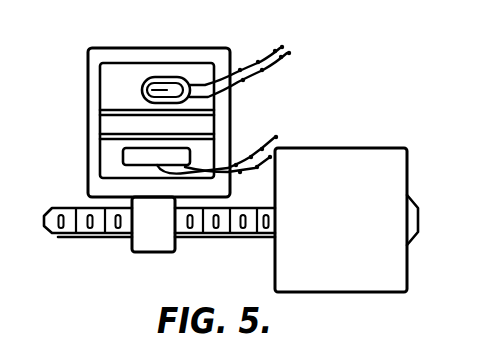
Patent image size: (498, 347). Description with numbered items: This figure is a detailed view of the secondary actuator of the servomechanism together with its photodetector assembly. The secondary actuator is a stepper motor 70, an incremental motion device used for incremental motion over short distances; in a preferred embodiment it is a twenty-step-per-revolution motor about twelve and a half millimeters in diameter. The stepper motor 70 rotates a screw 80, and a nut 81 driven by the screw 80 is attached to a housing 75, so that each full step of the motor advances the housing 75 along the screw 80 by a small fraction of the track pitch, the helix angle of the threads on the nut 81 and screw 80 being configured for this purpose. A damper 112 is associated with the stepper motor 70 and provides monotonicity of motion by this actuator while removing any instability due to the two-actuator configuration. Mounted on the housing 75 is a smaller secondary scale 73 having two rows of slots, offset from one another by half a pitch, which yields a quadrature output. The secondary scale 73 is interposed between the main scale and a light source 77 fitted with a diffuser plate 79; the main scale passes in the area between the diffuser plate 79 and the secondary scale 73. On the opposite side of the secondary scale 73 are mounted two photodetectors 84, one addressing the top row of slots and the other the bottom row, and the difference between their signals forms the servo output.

The stepper motor 70 is at (360, 152).
The secondary scale 73 is at (207, 134).
The housing 75 is at (88, 86).
The light source 77 is at (172, 77).
The diffuser plate 79 is at (210, 109).
The screw 80 is at (83, 242).
The nut 81 is at (156, 243).
The photodetectors 84 is at (123, 155).
The damper 112 is at (418, 220).